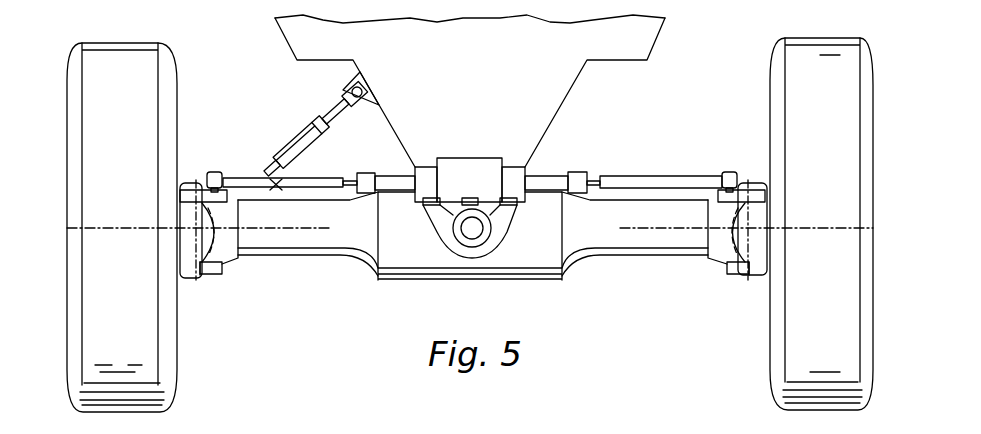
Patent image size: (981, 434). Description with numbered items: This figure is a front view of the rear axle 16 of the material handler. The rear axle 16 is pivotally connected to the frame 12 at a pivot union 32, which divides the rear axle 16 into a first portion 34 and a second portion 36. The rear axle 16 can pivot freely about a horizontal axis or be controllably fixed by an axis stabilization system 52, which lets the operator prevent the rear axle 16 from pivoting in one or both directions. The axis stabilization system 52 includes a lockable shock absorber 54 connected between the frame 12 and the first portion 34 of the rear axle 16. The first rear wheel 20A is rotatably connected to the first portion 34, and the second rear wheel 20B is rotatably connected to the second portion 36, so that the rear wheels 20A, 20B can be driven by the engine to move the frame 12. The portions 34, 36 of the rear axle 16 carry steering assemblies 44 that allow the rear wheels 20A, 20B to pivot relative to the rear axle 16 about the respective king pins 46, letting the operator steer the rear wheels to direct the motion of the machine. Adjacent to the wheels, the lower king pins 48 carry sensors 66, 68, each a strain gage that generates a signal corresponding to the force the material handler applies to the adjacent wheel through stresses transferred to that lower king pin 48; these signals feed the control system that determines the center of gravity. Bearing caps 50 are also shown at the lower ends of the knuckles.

The frame 12 is at (450, 104).
The rear axle 16 is at (528, 253).
The first rear wheel 20A is at (792, 63).
The second rear wheel 20B is at (148, 80).
The pivot union 32 is at (457, 243).
The first portion 34 is at (311, 247).
The second portion 36 is at (685, 233).
The steering assemblies 44 is at (212, 164).
The king pins 46 is at (190, 236).
The lower king pins 48 is at (202, 182).
The kingpin bearing cap 50 is at (201, 283).
The axis stabilization system 52 is at (320, 92).
The lockable shock absorber 54 is at (327, 141).
The sensor 66 is at (204, 283).
The sensor 68 is at (742, 278).